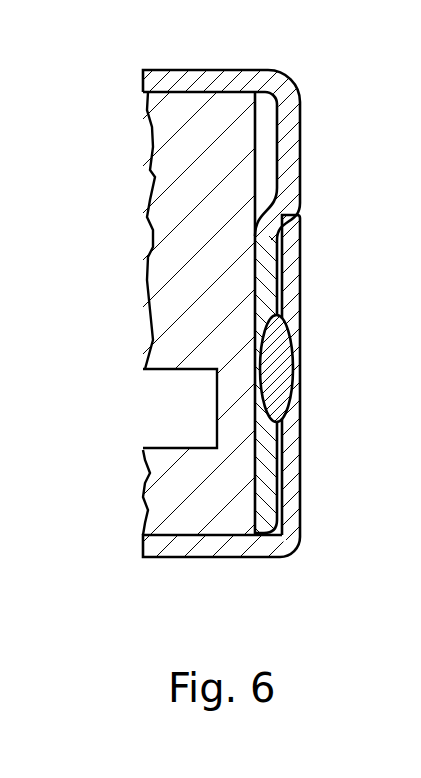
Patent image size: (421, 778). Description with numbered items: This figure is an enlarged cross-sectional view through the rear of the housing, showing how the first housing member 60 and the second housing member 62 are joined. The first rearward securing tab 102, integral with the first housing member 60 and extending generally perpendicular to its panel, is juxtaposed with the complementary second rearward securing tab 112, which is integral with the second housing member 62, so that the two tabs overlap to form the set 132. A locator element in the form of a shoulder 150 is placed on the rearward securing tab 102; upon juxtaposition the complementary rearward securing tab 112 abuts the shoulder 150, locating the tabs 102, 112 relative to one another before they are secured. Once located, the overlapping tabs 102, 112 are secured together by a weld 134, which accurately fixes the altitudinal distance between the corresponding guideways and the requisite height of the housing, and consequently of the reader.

The first housing member 60 is at (245, 70).
The second housing member 62 is at (238, 557).
The first rearward securing tab 102 is at (255, 278).
The second rearward securing tab 112 is at (297, 493).
The set of complementary overlapping first and second rearward securing tabs 132 is at (298, 298).
The weld 134 is at (288, 372).
The shoulder 150 is at (300, 153).